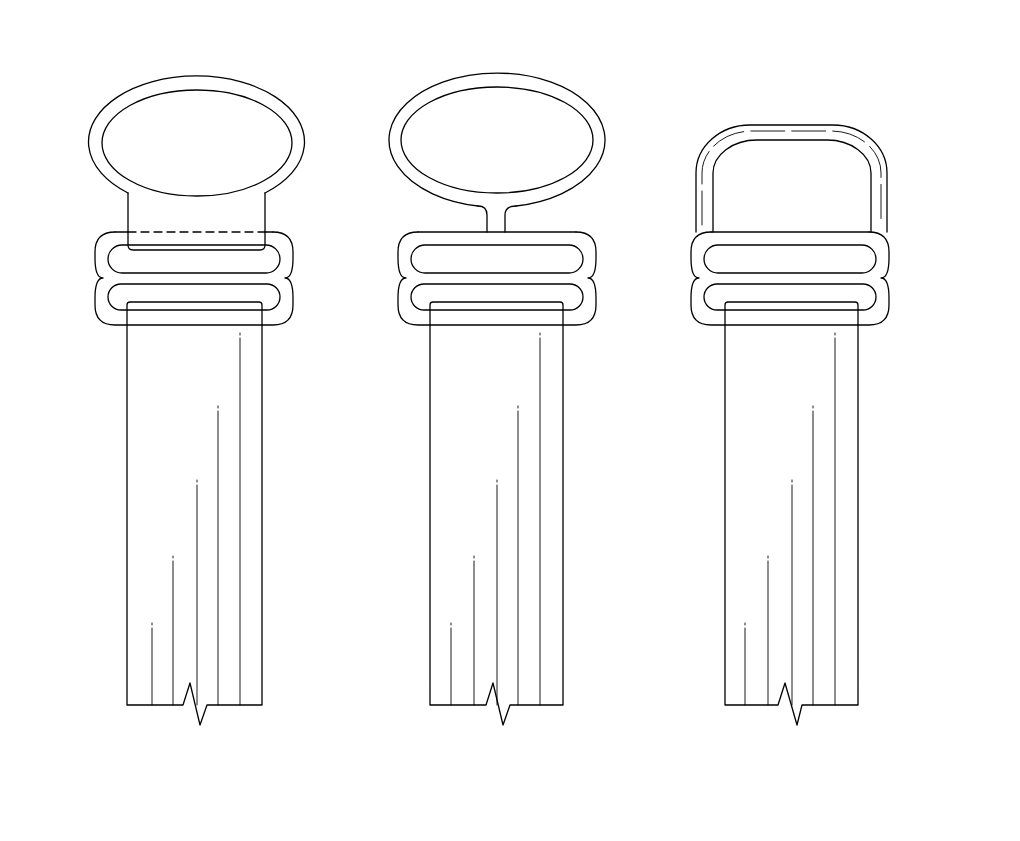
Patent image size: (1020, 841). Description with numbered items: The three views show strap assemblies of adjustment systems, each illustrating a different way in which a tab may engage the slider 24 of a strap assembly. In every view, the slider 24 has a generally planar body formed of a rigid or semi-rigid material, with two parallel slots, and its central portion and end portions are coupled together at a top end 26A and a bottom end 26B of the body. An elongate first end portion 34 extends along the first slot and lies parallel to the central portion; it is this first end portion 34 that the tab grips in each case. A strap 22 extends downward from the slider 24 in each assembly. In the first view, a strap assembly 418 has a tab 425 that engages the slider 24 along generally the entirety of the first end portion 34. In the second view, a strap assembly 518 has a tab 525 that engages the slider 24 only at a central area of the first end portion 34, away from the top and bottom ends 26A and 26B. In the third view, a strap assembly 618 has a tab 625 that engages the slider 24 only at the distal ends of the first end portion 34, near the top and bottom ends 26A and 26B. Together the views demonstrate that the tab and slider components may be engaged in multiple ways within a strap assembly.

In FIG. 5A, the strap 22 is at (147, 546).
In FIG. 5B, the strap 22 is at (446, 524).
In FIG. 5C, the strap 22 is at (747, 487).
In FIG. 5A, the slider 24 is at (100, 280).
In FIG. 5B, the slider 24 is at (410, 282).
In FIG. 5C, the slider 24 is at (698, 283).
In FIG. 5A, the top end 26A is at (194, 259).
In FIG. 5B, the top end 26A is at (604, 247).
In FIG. 5C, the top end 26A is at (889, 276).
In FIG. 5A, the bottom end 26B is at (194, 297).
In FIG. 5B, the bottom end 26B is at (393, 275).
In FIG. 5C, the bottom end 26B is at (687, 314).
In FIG. 5A, the first end portion 34 is at (148, 232).
In FIG. 5B, the first end portion 34 is at (443, 237).
In FIG. 5C, the first end portion 34 is at (778, 236).
In FIG. 5A, the strap assembly 418 is at (121, 48).
In FIG. 5A, the tab 425 is at (196, 80).
In FIG. 5B, the strap assembly 518 is at (416, 48).
In FIG. 5B, the tab 525 is at (496, 78).
In FIG. 5C, the strap assembly 618 is at (730, 81).
In FIG. 5C, the tab 625 is at (792, 131).